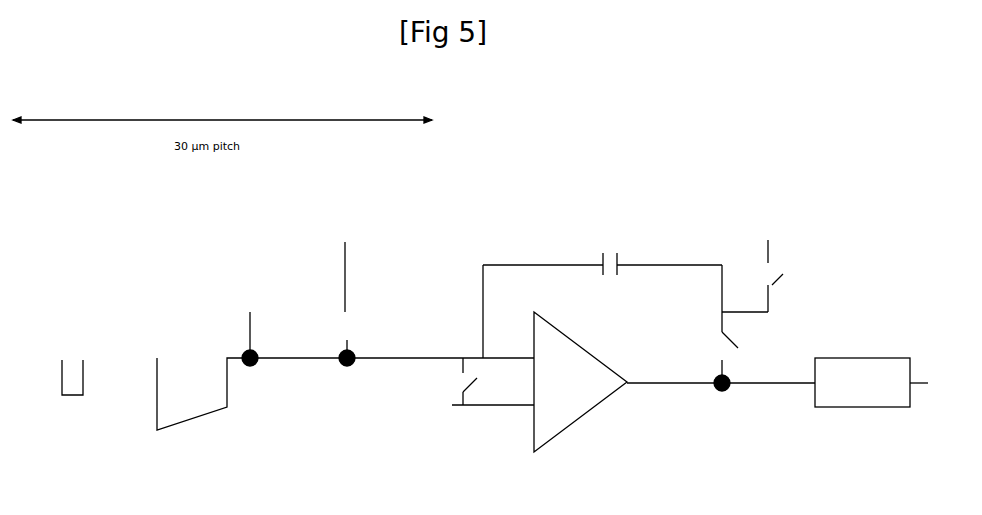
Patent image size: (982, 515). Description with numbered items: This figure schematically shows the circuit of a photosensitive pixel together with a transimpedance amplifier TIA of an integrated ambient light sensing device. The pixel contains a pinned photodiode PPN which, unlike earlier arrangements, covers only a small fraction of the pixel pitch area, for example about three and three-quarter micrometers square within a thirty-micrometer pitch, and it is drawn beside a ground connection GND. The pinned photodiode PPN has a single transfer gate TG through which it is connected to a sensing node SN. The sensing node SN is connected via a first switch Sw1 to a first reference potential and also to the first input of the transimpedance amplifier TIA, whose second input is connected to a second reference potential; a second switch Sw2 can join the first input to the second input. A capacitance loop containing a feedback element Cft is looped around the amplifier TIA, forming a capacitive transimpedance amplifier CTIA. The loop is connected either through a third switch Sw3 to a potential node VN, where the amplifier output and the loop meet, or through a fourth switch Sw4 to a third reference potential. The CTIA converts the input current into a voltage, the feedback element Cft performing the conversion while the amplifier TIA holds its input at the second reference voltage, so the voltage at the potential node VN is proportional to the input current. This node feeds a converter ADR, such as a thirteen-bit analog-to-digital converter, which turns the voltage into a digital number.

The ground GND is at (72, 363).
The pinned photodiode node PPN is at (203, 380).
The transfer gate TG is at (249, 325).
The sensing node SN is at (346, 368).
The switch Sw1 is at (347, 274).
The second switch Sw2 is at (452, 401).
The transimpedance amplifier TIA is at (580, 382).
The looped transimpedance amplifier CTIA is at (595, 201).
The feedback element Cft is at (613, 251).
The third switch Sw3 is at (745, 357).
The fourth switch Sw4 is at (767, 259).
The output voltage node VN is at (722, 394).
The address/readout block ADR is at (871, 382).